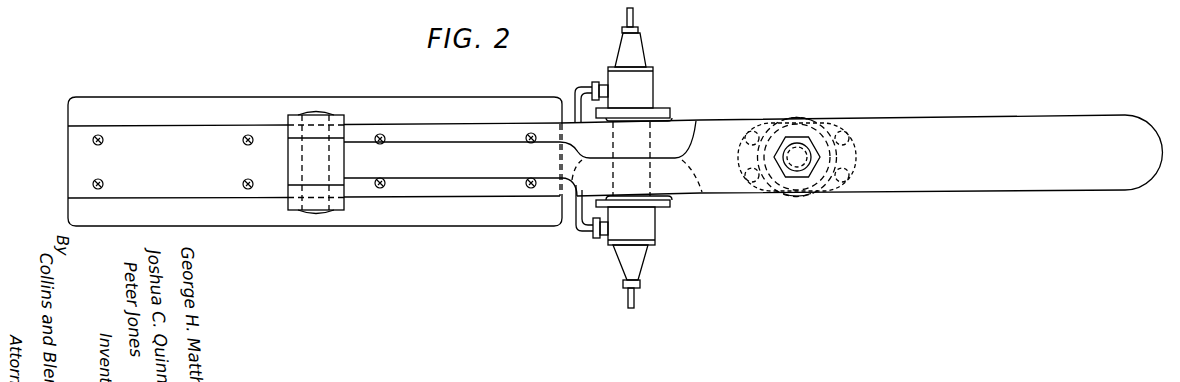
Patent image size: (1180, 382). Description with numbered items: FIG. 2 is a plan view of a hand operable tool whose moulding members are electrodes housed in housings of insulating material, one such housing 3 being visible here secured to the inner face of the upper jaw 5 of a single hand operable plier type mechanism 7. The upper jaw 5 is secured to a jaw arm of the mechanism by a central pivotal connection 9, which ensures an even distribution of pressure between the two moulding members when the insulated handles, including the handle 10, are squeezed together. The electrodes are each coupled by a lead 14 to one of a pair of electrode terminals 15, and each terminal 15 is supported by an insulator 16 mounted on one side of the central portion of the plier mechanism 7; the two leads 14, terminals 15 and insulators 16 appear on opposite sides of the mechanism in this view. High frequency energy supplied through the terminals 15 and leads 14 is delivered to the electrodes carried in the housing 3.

The housing 3 is at (140, 148).
The upper jaw 5 is at (188, 115).
The plier type mechanism 7 is at (693, 119).
The central pivotal connection 9 is at (314, 123).
The insulated handle 10 is at (877, 135).
The lead 14 is at (575, 88).
The electrode terminal 15 is at (638, 28).
The insulator 16 is at (637, 50).